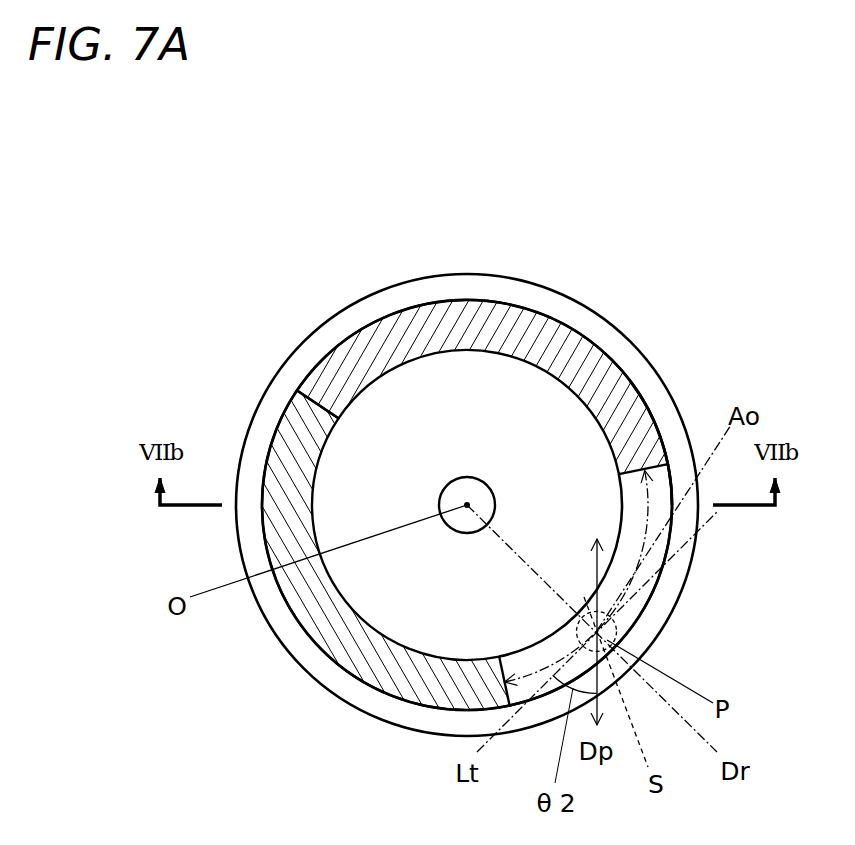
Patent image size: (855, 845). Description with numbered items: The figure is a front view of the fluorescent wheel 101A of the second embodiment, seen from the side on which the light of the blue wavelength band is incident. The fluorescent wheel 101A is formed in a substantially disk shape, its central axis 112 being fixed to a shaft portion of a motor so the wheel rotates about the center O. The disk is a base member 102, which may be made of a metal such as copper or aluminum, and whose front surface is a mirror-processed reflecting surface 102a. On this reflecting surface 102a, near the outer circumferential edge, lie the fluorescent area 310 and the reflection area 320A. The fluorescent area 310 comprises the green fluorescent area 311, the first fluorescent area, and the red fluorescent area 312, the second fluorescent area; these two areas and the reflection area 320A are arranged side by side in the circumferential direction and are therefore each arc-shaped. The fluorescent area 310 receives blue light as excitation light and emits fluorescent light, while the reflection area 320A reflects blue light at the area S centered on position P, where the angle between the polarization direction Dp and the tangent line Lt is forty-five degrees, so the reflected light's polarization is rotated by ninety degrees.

The fluorescent wheel 101A is at (599, 256).
The base member 102 is at (645, 377).
The reflecting surface 102a is at (662, 408).
The central axis 112 is at (486, 485).
The fluorescent area 310 is at (435, 461).
The green fluorescent area 311 is at (413, 330).
The red fluorescent area 312 is at (332, 620).
The reflection area 320A is at (648, 610).